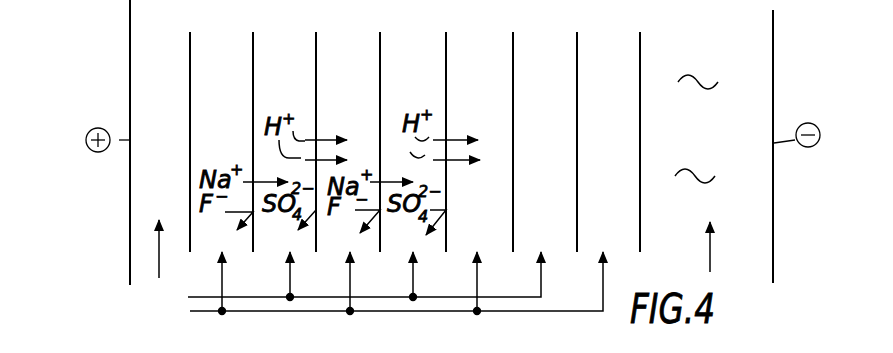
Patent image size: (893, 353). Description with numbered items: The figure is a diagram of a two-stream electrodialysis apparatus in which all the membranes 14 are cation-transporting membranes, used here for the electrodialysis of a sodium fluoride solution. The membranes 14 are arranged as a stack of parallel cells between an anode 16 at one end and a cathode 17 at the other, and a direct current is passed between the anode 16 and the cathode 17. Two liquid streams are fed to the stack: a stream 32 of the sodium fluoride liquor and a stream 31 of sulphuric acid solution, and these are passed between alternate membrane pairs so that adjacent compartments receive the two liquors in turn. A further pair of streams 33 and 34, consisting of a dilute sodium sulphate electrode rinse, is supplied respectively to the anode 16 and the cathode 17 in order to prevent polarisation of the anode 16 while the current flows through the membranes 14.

The membranes 14 is at (191, 68).
The anode 16 is at (128, 77).
The cathode 17 is at (775, 96).
The stream of sulphuric acid solution 31 is at (185, 299).
The stream of NaF liquor 32 is at (186, 313).
The anode rinse stream 33 is at (157, 264).
The cathode rinse stream 34 is at (727, 248).